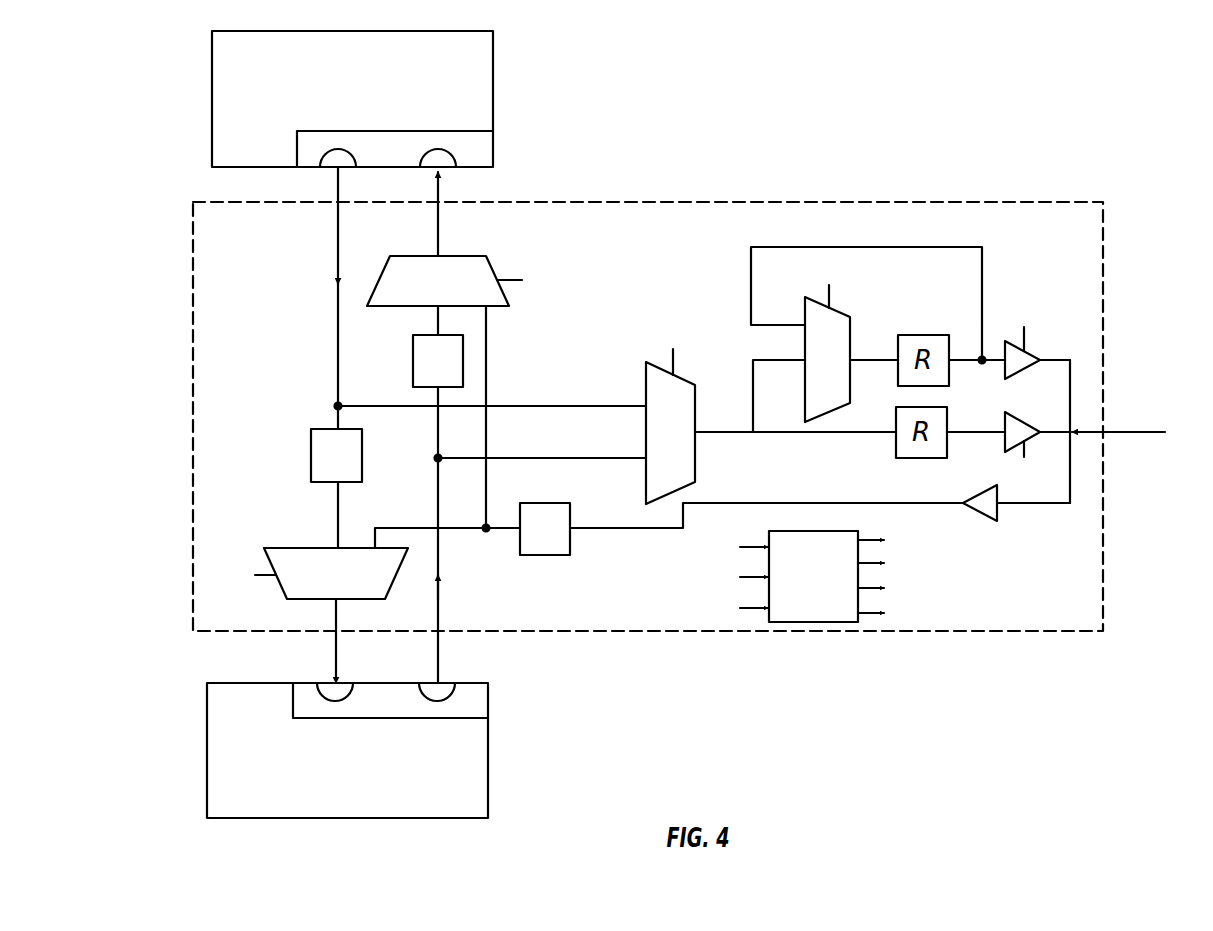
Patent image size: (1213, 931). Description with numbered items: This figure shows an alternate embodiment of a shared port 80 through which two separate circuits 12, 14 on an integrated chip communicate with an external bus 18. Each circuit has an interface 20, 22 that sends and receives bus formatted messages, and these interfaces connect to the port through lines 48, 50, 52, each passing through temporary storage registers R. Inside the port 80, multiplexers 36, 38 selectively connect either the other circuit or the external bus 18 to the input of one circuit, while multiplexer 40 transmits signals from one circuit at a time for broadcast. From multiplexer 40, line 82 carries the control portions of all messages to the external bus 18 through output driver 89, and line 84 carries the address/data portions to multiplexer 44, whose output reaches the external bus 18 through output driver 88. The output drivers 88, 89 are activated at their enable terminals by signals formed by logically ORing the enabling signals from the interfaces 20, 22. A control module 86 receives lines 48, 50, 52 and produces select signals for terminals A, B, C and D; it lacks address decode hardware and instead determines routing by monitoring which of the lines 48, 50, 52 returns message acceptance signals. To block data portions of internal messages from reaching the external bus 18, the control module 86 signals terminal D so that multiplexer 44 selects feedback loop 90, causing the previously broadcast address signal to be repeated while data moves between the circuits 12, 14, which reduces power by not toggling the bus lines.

The circuit 12 is at (360, 113).
The circuit 14 is at (357, 765).
The external bus 18 is at (1148, 430).
The interface 20 is at (482, 143).
The interface 22 is at (478, 698).
The multiplexer 36 is at (350, 588).
The multiplexer 38 is at (453, 294).
The multiplexer 40 is at (687, 446).
The multiplexer 44 is at (842, 375).
The line 48 is at (337, 250).
The line 50 is at (439, 558).
The line 52 is at (768, 502).
The shared port 80 is at (1095, 200).
The line 82 is at (783, 434).
The line 84 is at (752, 406).
The control module 86 is at (822, 591).
The output driver 88 is at (1031, 348).
The output driver 89 is at (1020, 411).
The feedback loop 90 is at (782, 327).